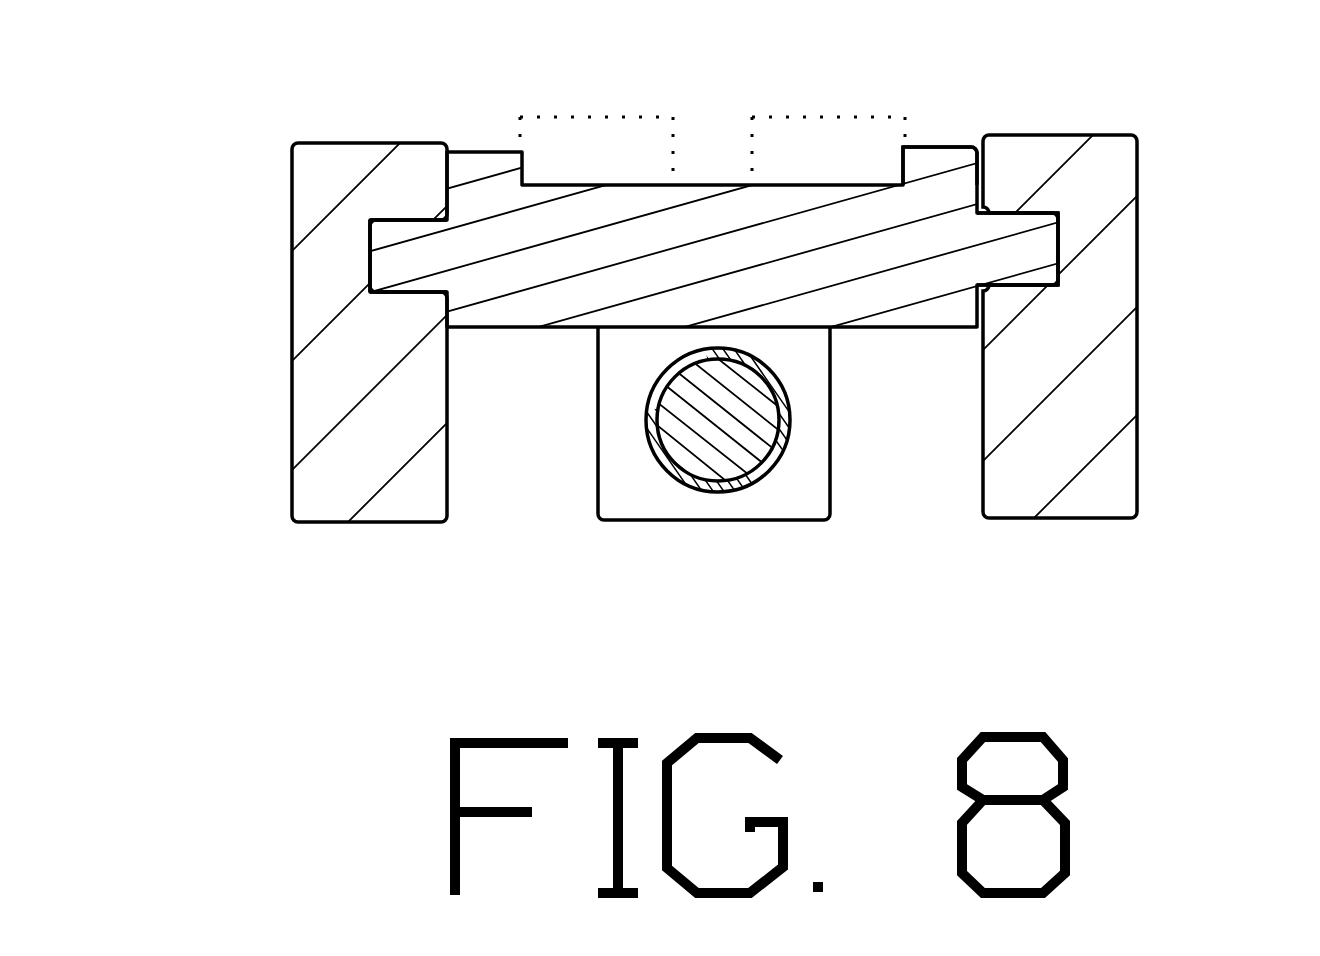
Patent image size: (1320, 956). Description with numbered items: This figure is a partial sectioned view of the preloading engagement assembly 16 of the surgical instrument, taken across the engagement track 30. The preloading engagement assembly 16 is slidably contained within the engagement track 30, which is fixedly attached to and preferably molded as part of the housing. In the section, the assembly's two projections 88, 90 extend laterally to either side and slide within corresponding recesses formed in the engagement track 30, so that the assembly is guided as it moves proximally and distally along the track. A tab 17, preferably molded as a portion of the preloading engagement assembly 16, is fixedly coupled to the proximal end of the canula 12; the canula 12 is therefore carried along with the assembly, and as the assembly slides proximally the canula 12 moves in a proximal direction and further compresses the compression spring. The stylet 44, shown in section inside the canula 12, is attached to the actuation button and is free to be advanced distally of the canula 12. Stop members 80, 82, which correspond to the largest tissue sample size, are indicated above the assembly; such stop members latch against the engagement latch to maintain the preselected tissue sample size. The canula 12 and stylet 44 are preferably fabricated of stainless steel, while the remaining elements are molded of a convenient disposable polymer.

The canula 12 is at (782, 430).
The preloading engagement assembly 16 is at (930, 163).
The tab 17 is at (723, 507).
The engagement track 30 is at (435, 508).
The stylet 44 is at (735, 453).
The stop member 80 is at (655, 133).
The stop member 82 is at (887, 137).
The projection 88 is at (387, 237).
The projection 90 is at (1042, 243).